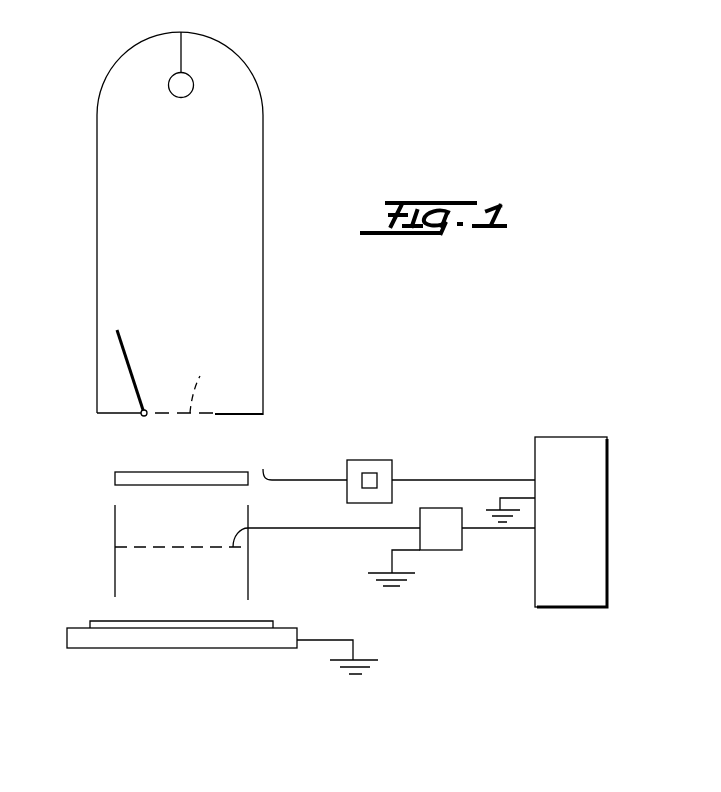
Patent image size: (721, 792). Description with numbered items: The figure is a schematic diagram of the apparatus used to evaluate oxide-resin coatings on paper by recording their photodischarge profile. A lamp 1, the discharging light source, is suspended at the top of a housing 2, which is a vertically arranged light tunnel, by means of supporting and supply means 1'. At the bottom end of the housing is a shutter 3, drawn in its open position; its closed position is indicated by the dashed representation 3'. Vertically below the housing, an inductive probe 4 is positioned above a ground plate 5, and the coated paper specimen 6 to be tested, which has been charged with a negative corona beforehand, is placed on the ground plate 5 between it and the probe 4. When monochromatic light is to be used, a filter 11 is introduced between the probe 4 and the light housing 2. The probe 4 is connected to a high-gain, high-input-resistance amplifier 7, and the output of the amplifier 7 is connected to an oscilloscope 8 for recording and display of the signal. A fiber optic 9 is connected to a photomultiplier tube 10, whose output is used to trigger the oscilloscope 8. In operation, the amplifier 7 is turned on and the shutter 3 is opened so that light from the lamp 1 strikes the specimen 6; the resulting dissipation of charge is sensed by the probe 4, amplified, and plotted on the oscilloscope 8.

The lamp 1 is at (196, 83).
The supporting and supply means 1' is at (206, 39).
The housing 2 is at (263, 155).
The shutter 3 is at (136, 373).
The shutter in closed position 3' is at (200, 384).
The inductive probe 4 is at (115, 525).
The ground plate 5 is at (67, 637).
The coated paper specimen 6 is at (100, 621).
The amplifier 7 is at (448, 550).
The oscilloscope 8 is at (607, 515).
The fiber optic 9 is at (312, 480).
The photomultiplier tube 10 is at (372, 460).
The filter 11 is at (119, 472).